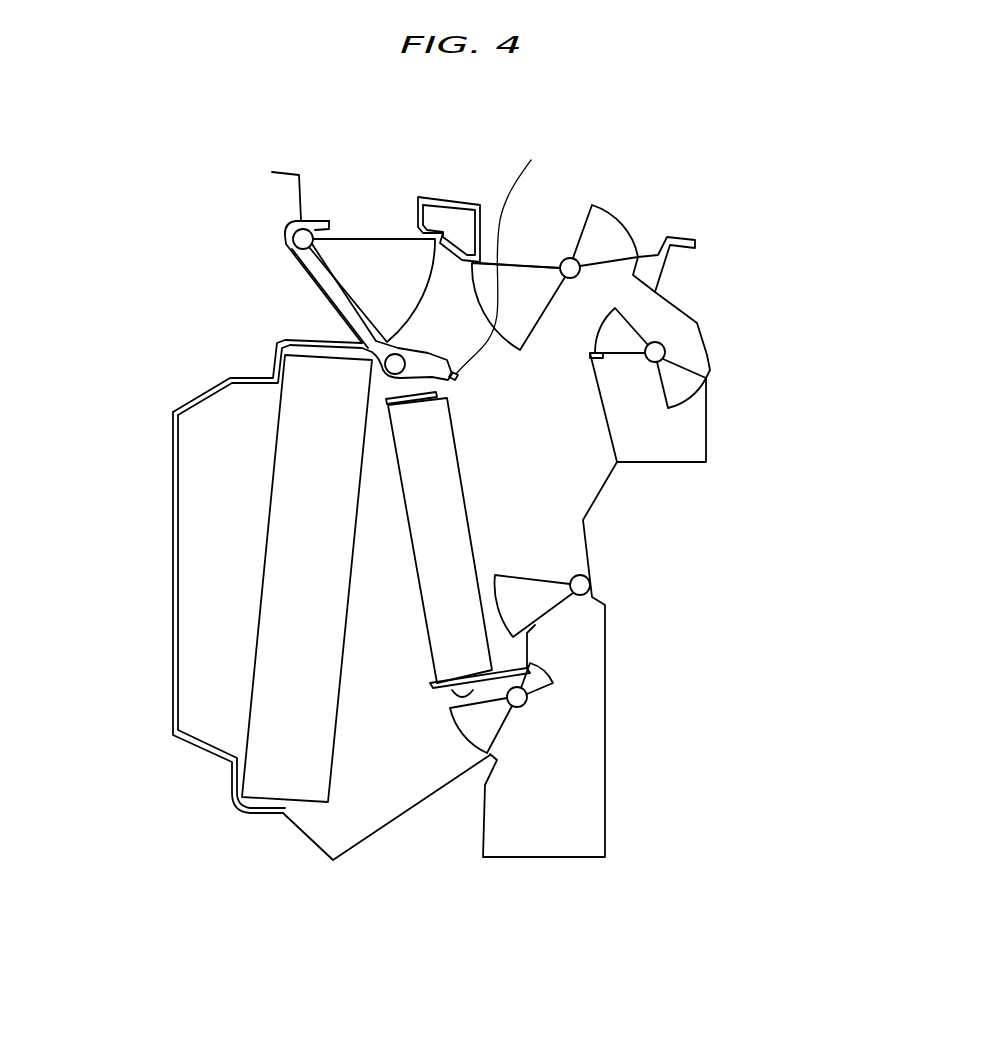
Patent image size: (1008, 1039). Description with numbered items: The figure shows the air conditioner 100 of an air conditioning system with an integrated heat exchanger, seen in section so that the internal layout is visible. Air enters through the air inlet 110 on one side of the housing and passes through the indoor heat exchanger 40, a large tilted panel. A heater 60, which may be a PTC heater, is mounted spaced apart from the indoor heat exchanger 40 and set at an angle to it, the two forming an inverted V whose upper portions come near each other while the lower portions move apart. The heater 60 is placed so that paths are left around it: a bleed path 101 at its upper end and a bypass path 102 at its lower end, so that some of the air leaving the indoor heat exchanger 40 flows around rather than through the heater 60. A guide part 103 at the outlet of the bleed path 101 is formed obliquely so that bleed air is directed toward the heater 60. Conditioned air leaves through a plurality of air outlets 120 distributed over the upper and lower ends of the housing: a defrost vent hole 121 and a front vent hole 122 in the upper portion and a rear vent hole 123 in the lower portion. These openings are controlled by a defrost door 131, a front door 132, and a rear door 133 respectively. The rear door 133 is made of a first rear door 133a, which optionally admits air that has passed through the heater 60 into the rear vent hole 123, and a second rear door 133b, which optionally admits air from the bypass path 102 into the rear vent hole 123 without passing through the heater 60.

The indoor heat exchanger 40 is at (290, 762).
The heater 60 is at (452, 538).
The air conditioner 100 is at (214, 374).
The bleed path 101 is at (405, 387).
The bypass path 102 is at (457, 690).
The guide part 103 is at (510, 253).
The air inlet 110 is at (174, 628).
The air outlets 120 is at (634, 538).
The defrost vent hole 121 is at (418, 207).
The front vent hole 122 is at (662, 243).
The rear vent hole 123 is at (555, 858).
The defrost door 131 is at (368, 240).
The front door 132 is at (606, 220).
The rear door 133 is at (622, 672).
The first rear door 133a is at (537, 605).
The second rear door 133b is at (490, 720).